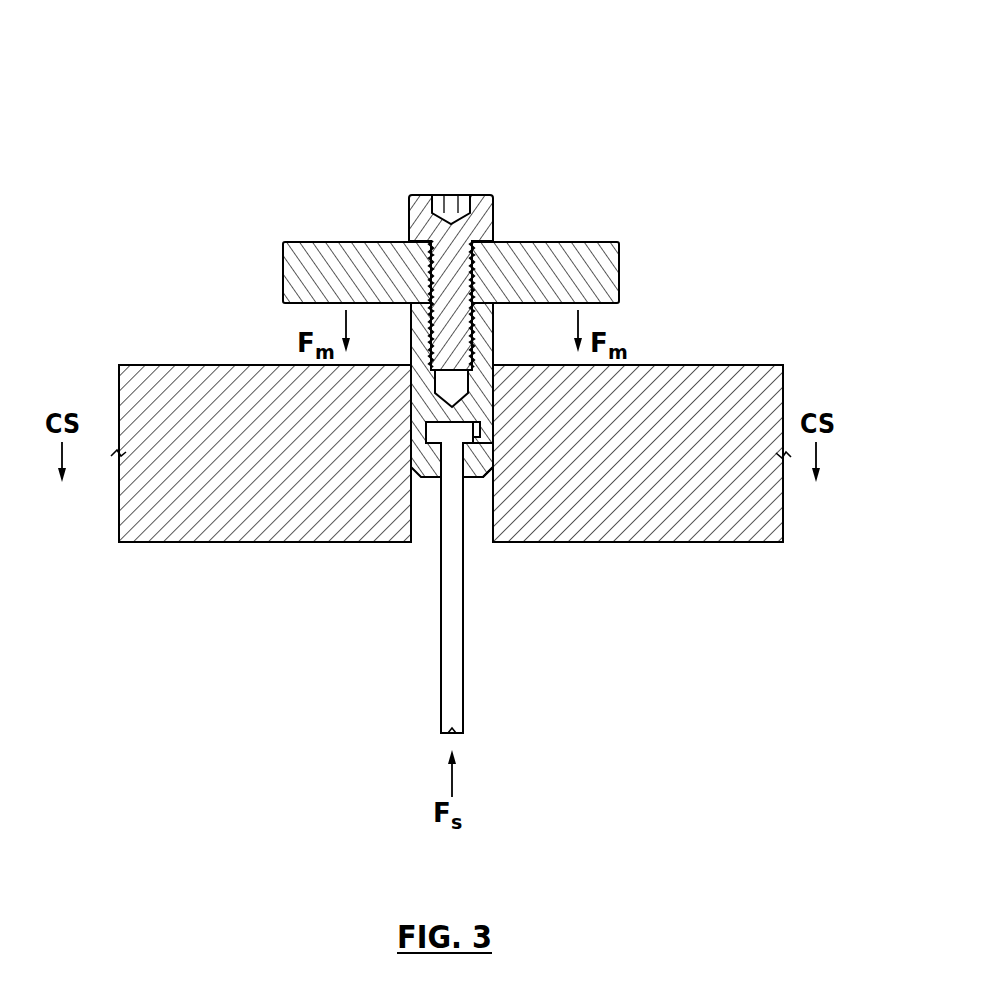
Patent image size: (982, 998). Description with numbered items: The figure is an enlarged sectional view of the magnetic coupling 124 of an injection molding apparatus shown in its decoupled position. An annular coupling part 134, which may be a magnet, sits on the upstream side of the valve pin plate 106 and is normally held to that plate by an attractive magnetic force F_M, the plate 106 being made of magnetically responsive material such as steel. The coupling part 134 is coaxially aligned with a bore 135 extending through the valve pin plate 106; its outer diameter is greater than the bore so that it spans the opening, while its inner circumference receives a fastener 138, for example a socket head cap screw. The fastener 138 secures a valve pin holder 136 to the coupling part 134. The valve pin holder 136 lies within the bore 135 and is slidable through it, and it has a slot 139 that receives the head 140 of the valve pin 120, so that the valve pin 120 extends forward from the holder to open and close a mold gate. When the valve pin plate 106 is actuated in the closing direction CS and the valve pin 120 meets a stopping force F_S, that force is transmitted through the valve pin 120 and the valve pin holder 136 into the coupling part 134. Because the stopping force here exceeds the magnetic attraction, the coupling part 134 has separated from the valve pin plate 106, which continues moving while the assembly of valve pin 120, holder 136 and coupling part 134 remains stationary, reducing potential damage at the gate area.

The valve pin plate 106 is at (772, 407).
The valve pin 120 is at (455, 682).
The magnetic coupling 124 is at (294, 149).
The coupling part 134 is at (612, 262).
The bore 135 is at (411, 520).
The valve pin holder 136 is at (480, 458).
The fastener 138 is at (481, 224).
The slot 139 is at (481, 430).
The head 140 is at (420, 440).